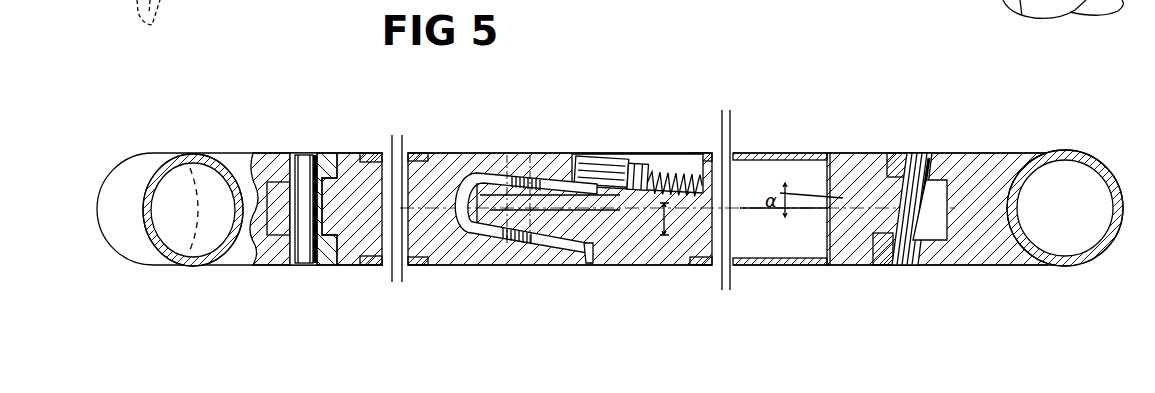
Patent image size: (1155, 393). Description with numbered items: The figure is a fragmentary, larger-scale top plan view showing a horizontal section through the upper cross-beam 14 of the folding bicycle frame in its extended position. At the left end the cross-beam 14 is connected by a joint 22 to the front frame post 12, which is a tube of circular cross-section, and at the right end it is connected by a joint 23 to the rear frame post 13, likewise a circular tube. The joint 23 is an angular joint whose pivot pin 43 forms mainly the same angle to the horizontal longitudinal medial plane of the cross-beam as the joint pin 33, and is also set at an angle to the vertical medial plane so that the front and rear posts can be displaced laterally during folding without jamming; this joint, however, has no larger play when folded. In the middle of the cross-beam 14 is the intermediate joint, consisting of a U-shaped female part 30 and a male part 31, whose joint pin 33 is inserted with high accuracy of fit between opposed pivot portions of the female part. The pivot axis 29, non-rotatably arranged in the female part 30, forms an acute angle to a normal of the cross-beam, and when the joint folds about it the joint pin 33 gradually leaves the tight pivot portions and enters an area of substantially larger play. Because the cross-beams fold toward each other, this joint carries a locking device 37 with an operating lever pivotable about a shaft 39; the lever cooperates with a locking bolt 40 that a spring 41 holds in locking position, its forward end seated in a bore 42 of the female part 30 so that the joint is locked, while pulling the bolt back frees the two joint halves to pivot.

The front frame post 12 is at (138, 175).
The rear frame post 13 is at (1102, 167).
The upper cross-beam 14 is at (415, 152).
The joint 22 is at (307, 198).
The joint 23 is at (908, 177).
The pivot axis 29 is at (515, 245).
The female part 30 is at (432, 212).
The male part 31 is at (657, 230).
The joint pin 33 is at (487, 208).
The locking device 37 is at (643, 9).
The shaft 39 is at (632, 210).
The locking bolt 40 is at (603, 170).
The spring 41 is at (677, 170).
The bore 42 is at (575, 180).
The pivot pin 43 is at (930, 240).